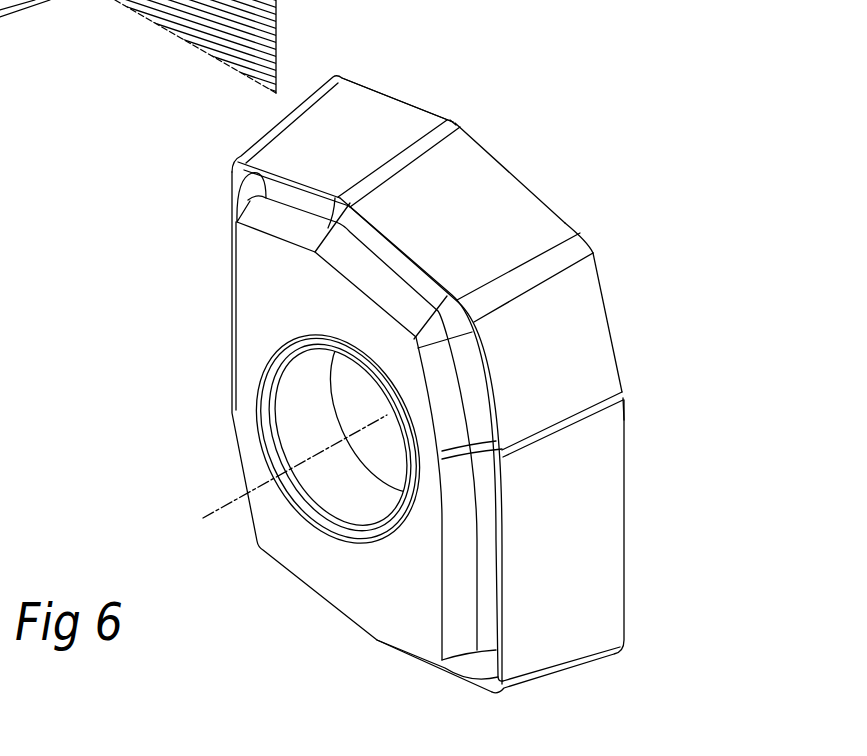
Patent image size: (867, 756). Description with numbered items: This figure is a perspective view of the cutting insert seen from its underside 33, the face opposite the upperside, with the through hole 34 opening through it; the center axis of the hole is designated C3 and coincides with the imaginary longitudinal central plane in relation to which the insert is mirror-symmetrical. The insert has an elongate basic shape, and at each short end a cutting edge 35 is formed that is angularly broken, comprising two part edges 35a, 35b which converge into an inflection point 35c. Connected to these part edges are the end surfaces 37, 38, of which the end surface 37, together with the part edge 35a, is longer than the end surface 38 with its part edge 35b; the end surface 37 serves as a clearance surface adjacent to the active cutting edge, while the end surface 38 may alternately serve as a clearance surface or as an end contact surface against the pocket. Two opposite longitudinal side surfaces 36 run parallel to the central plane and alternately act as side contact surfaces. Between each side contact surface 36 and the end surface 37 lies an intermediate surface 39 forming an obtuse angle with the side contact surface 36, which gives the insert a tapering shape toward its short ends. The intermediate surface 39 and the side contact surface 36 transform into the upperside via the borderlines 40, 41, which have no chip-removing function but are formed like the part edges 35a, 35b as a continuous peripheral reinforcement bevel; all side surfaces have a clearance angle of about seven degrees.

The underside 33 is at (291, 305).
The through hole 34 is at (301, 418).
The cutting edge 35 is at (578, 216).
The part edge 35a is at (515, 177).
The part edge 35b is at (392, 98).
The inflection point 35c is at (453, 122).
The side contact surface 36 is at (585, 567).
The end surface 37 is at (476, 241).
The end surface 38 is at (360, 159).
The intermediate surface 39 is at (565, 371).
The borderline 40 is at (610, 328).
The borderline 41 is at (625, 507).
The center axis C3 is at (232, 507).